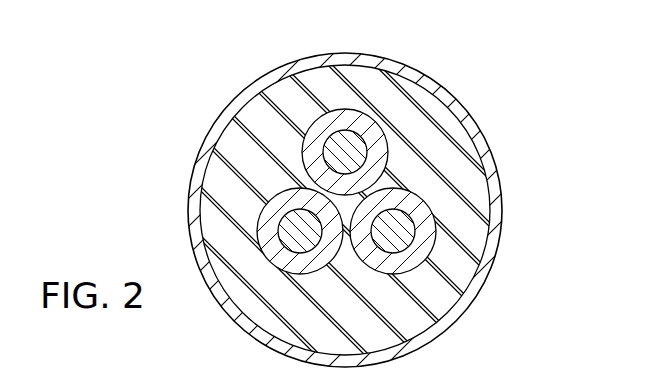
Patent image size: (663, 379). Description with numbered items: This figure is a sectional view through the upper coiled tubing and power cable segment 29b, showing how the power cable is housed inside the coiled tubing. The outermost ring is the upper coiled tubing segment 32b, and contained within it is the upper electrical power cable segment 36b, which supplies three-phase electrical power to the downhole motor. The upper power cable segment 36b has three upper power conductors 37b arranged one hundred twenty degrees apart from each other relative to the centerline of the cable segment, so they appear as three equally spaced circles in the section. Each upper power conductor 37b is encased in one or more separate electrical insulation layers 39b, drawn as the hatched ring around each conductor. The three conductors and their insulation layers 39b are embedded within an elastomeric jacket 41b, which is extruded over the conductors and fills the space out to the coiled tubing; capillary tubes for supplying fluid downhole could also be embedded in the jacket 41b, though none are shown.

The upper coiled tubing and power cable segment 29b is at (411, 56).
The upper coiled tubing segment 32b is at (493, 213).
The upper electrical power cable segment 36b is at (463, 110).
The upper power conductor 37b is at (337, 132).
The electrical insulation layer 39b is at (408, 257).
The elastomeric jacket 41b is at (473, 193).